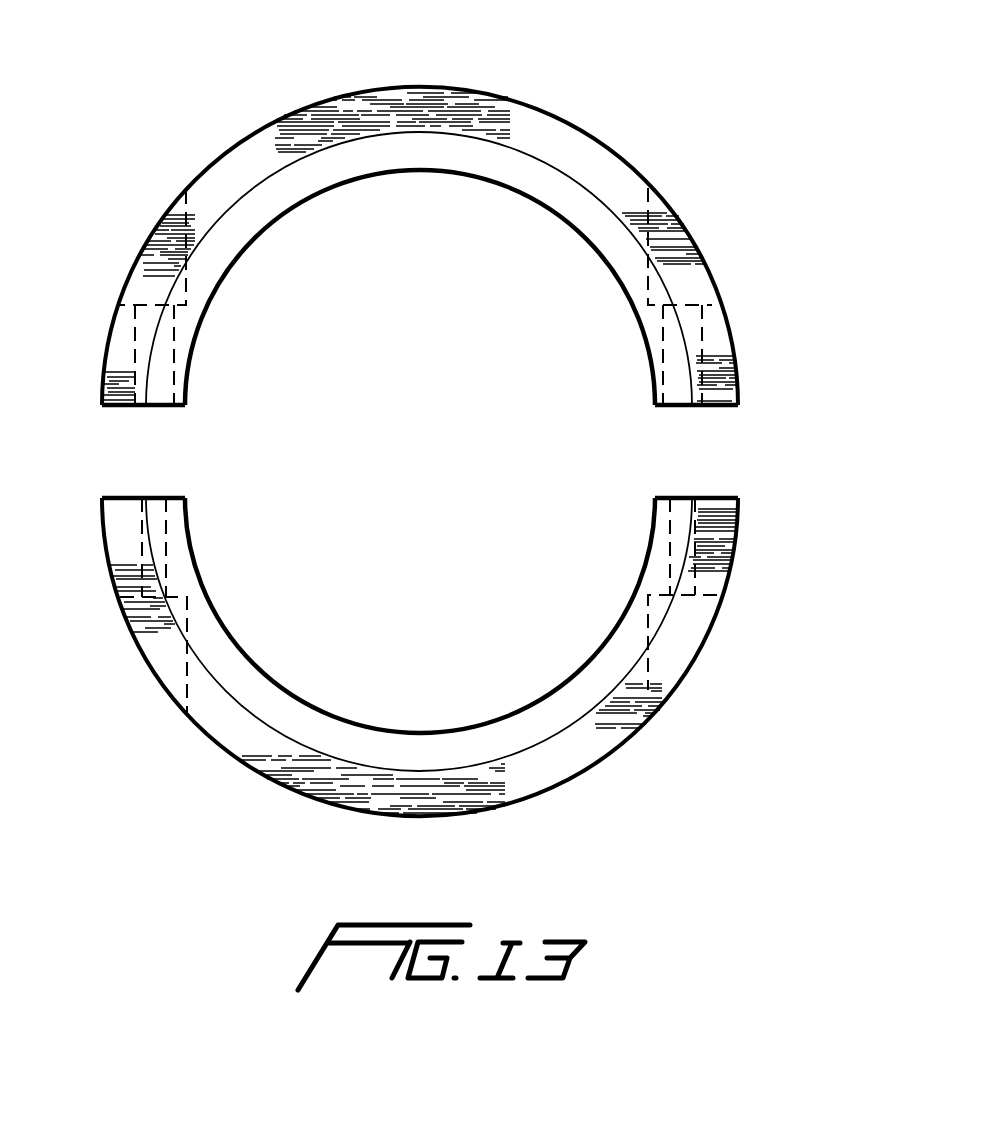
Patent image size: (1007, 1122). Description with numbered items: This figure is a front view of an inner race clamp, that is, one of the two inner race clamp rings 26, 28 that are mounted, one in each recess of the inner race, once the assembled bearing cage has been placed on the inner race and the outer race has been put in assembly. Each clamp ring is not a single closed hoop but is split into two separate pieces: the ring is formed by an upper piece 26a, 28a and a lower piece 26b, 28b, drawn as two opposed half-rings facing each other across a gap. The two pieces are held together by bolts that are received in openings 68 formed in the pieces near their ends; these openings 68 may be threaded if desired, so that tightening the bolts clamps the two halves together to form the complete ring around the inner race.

The inner race clamp ring 26 is at (455, 467).
The inner race clamp ring 28 is at (455, 467).
The clamp ring piece 26a is at (400, 223).
The clamp ring piece 28a is at (248, 132).
The clamp ring piece 26b is at (420, 695).
The clamp ring piece 28b is at (243, 766).
The opening 68 is at (147, 516).